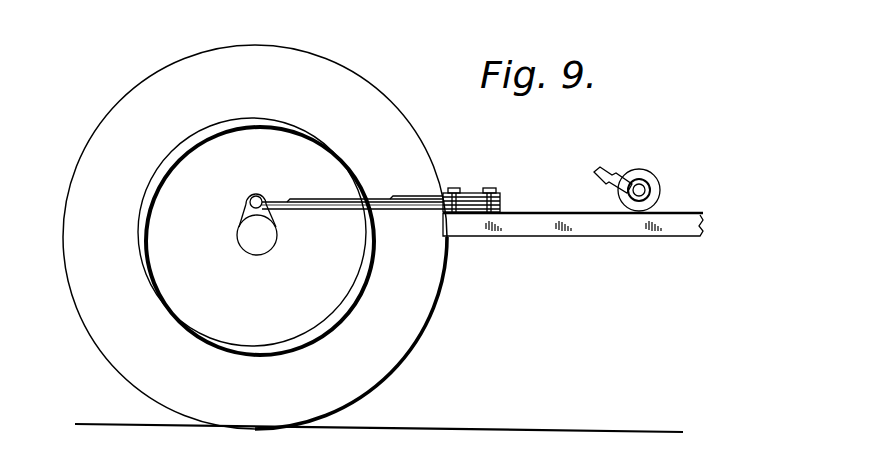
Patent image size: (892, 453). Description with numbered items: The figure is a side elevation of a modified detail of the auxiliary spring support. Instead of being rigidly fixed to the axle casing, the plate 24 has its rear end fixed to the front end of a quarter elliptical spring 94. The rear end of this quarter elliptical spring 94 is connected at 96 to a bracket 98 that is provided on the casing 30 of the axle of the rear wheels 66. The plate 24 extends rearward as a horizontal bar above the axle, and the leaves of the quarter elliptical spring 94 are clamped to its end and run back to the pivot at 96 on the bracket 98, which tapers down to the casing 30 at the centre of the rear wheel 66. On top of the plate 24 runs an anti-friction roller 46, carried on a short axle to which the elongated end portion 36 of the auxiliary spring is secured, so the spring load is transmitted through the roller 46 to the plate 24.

The plate 24 is at (538, 211).
The casing 30 is at (257, 255).
The elongated end portion 36 is at (599, 168).
The anti-friction roller 46 is at (652, 172).
The rear wheel 66 is at (448, 285).
The quarter elliptical spring 94 is at (443, 192).
The connection 96 is at (256, 196).
The bracket 98 is at (246, 209).